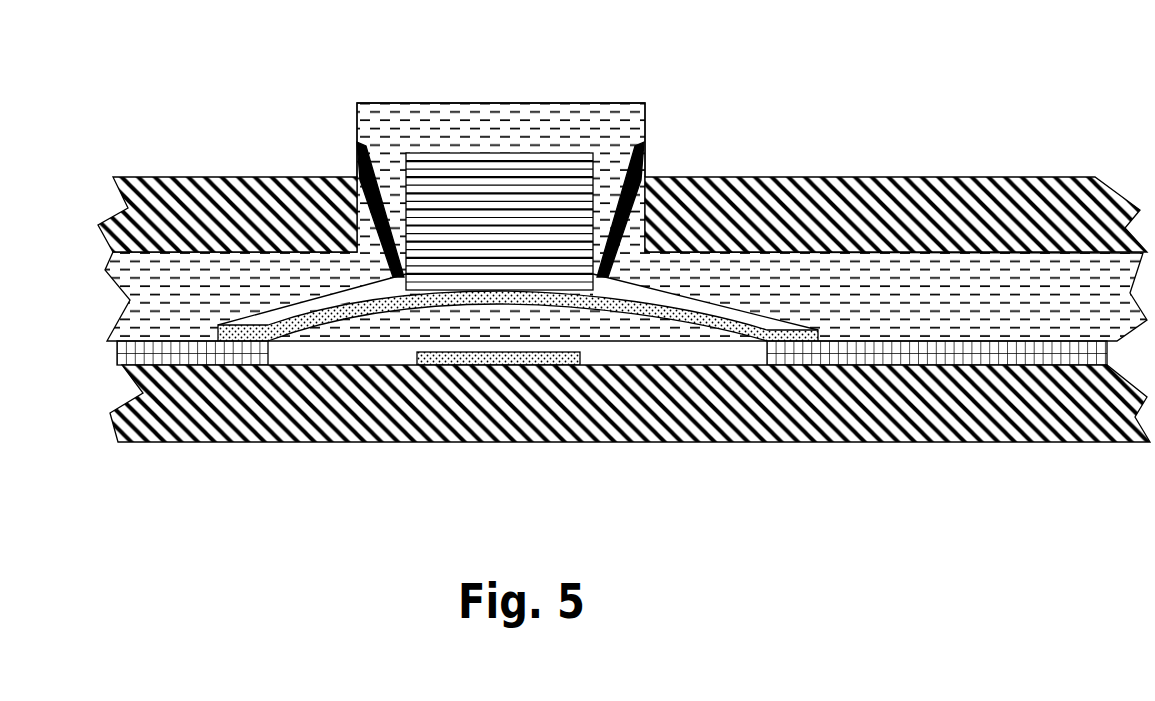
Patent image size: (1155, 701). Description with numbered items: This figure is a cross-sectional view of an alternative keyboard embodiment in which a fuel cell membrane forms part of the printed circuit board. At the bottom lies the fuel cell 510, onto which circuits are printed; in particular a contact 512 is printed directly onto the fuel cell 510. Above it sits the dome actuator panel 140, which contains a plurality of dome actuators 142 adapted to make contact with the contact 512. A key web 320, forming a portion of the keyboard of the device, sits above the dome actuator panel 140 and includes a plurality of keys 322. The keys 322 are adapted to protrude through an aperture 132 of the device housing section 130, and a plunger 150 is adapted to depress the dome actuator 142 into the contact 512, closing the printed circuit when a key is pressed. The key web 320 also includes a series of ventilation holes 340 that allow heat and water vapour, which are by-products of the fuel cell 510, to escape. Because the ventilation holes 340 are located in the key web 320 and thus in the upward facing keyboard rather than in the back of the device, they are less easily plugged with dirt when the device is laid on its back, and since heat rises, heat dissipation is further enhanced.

The device housing section 130 is at (100, 225).
The aperture 132 is at (652, 177).
The dome actuator panel 140 is at (115, 352).
The dome actuator 142 is at (614, 318).
The plunger 150 is at (507, 167).
The key web 320 is at (128, 300).
The key 322 is at (357, 127).
The ventilation hole 340 is at (356, 166).
The fuel cell 510 is at (110, 418).
The contact 512 is at (540, 357).